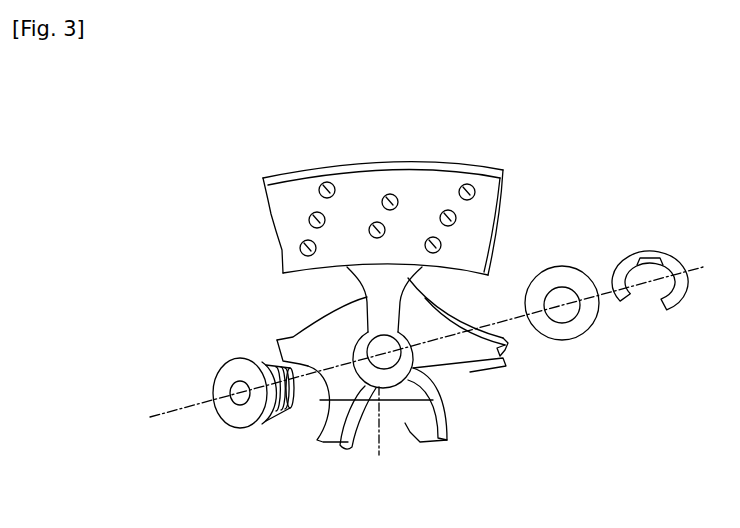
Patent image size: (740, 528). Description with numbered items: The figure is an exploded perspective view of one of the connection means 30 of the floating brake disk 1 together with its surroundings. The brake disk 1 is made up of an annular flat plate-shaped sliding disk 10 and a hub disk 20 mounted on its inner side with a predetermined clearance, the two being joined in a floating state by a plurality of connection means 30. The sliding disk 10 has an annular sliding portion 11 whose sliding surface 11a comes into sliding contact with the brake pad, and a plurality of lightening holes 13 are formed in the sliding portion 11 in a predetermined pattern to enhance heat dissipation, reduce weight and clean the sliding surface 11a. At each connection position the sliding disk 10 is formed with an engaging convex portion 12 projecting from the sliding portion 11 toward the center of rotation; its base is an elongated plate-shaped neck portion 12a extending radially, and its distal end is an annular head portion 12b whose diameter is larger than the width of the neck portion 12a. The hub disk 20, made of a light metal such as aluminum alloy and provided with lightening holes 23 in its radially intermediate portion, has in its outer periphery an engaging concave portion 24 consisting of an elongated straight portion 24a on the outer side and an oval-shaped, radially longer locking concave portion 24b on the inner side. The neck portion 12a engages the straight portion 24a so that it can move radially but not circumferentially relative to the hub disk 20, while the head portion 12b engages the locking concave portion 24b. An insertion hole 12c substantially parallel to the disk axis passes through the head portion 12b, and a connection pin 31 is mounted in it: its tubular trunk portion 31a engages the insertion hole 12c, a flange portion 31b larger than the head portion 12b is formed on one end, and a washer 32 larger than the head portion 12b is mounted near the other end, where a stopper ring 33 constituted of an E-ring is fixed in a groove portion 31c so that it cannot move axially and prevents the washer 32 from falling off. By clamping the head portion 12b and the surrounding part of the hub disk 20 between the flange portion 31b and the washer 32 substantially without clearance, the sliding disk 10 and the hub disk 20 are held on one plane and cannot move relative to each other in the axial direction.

The floating brake disk 1 is at (490, 143).
The sliding disk 10 is at (405, 162).
The sliding portion 11 is at (348, 172).
The sliding surface 11a is at (283, 183).
The engaging convex portion 12 is at (413, 293).
The neck portion 12a is at (368, 296).
The head portion 12b is at (413, 367).
The insertion hole 12c is at (382, 433).
The lightening holes 13 is at (441, 243).
The hub disk 20 is at (291, 330).
The lightening holes 23 is at (409, 437).
The engaging concave portion 24 is at (349, 440).
The straight portion 24a is at (440, 313).
The locking concave portion 24b is at (441, 397).
The connection means 30 is at (331, 391).
The connection pin 31 is at (213, 390).
The trunk portion 31a is at (266, 367).
The flange portion 31b is at (219, 366).
The groove portion 31c is at (285, 412).
The washer 32 is at (563, 337).
The stopper ring 33 is at (645, 253).